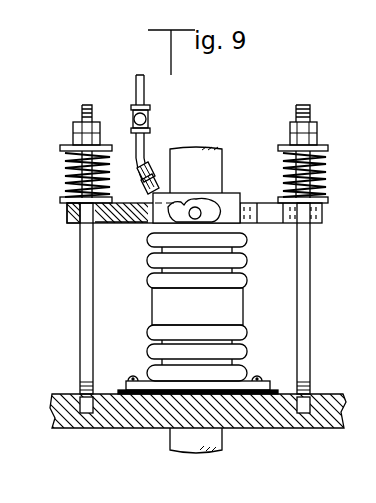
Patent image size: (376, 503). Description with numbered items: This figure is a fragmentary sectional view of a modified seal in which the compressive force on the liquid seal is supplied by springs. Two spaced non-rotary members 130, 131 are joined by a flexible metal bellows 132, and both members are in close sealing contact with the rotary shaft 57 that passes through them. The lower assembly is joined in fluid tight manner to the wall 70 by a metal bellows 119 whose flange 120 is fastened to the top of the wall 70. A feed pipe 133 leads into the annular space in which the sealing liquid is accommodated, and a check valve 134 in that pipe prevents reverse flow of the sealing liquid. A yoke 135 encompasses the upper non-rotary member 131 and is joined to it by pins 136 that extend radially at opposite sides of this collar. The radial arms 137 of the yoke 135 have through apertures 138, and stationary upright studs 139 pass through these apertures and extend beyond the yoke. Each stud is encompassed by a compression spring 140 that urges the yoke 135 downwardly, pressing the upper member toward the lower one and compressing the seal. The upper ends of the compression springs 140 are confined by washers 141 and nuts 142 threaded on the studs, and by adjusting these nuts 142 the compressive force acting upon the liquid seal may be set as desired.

The rotary shaft 57 is at (218, 452).
The wall 70 is at (306, 428).
The metal bellows 119 is at (246, 356).
The flange 120 is at (120, 387).
The non-rotary member 130 is at (244, 315).
The non-rotary member 131 is at (234, 195).
The flexible metal bellows 132 is at (147, 261).
The feed pipe 133 is at (148, 88).
The check valve 134 is at (153, 118).
The yoke 135 is at (130, 223).
The pins 136 is at (199, 208).
The radial arms 137 is at (274, 226).
The through apertures 138 is at (67, 213).
The stationary upright studs 139 is at (304, 330).
The compression springs 140 is at (68, 168).
The washers 141 is at (62, 146).
The nuts 142 is at (54, 118).